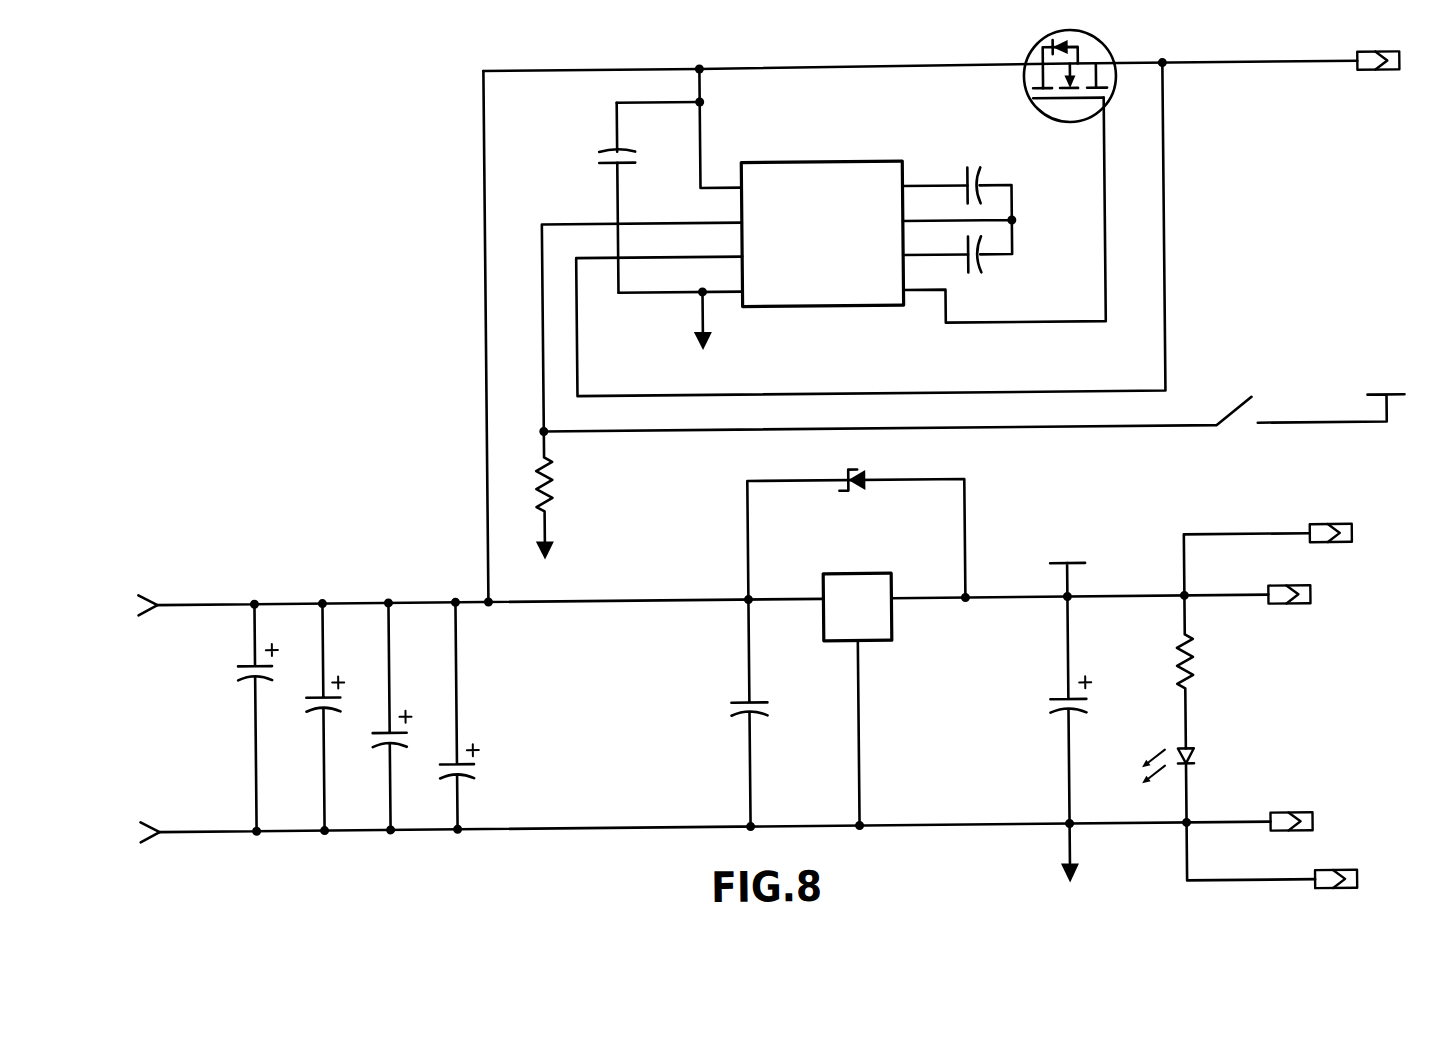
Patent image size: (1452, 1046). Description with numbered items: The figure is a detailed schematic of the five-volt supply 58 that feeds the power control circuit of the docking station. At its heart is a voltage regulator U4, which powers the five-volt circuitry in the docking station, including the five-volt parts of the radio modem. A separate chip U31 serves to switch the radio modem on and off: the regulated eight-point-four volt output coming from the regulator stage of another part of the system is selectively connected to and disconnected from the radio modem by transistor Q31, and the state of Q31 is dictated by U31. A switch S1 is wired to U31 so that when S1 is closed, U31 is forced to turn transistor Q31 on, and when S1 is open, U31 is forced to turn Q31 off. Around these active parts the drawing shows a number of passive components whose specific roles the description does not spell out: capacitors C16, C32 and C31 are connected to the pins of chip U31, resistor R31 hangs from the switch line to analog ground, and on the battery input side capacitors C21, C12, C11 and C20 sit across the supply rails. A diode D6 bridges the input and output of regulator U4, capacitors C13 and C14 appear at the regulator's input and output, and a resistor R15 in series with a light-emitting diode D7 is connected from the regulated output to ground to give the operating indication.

The 5 Volt supply 58 is at (350, 120).
The capacitor C16 is at (590, 198).
The chip U31 is at (820, 234).
The capacitor C32 is at (1003, 180).
The capacitor C31 is at (1004, 261).
The transistor Q31 is at (1041, 76).
The switch S1 is at (974, 398).
The resistor R31 is at (571, 495).
The capacitor C21 is at (243, 718).
The capacitor C12 is at (307, 717).
The capacitor C11 is at (378, 717).
The capacitor C20 is at (440, 716).
The zener diode D6 is at (869, 470).
The voltage regulator U4 is at (867, 595).
The capacitor C13 is at (775, 713).
The capacitor C14 is at (1095, 710).
The resistor R15 is at (1212, 672).
The yellow LED D7 (operating indicator) D7 is at (1221, 753).